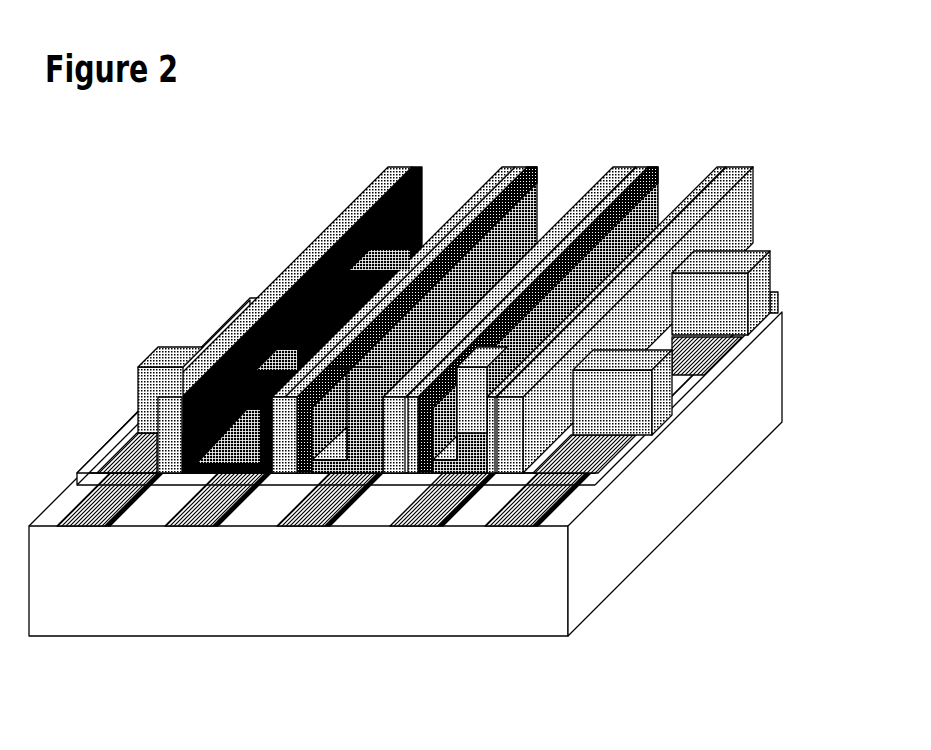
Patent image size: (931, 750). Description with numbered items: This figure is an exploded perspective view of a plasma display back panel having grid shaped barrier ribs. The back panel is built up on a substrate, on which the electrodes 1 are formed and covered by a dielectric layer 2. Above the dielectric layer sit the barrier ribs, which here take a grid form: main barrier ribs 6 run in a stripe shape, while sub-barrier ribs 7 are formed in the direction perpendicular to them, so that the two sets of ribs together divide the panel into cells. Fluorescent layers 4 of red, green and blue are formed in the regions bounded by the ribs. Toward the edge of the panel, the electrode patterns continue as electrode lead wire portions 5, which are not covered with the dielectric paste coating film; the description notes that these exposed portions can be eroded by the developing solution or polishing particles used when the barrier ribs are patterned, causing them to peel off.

The electrodes 1 is at (692, 358).
The dielectric layer 2 is at (113, 452).
The fluorescent layers 4 is at (450, 450).
The electrode lead wire portions 5 is at (320, 502).
The main barrier ribs 6 is at (547, 420).
The sub-barrier ribs 7 is at (645, 393).